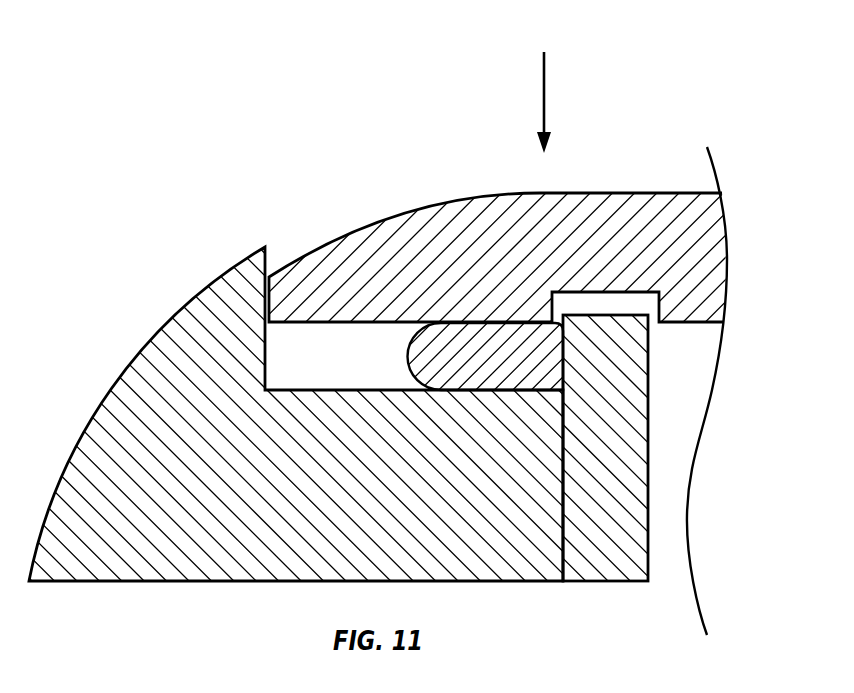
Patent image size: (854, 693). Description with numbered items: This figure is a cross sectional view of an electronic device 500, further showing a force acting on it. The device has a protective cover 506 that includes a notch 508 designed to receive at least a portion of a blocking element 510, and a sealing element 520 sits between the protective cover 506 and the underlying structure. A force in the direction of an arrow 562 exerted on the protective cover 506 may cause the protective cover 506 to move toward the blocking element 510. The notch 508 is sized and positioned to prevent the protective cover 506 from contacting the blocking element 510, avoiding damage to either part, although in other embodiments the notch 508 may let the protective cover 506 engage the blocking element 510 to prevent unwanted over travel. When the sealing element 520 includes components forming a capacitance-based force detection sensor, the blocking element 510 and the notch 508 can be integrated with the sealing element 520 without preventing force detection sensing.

The electronic device 500 is at (181, 180).
The protective cover 506 is at (435, 270).
The notch 508 is at (655, 341).
The blocking element 510 is at (648, 433).
The sealing element 520 is at (408, 367).
The arrow 562 is at (544, 107).